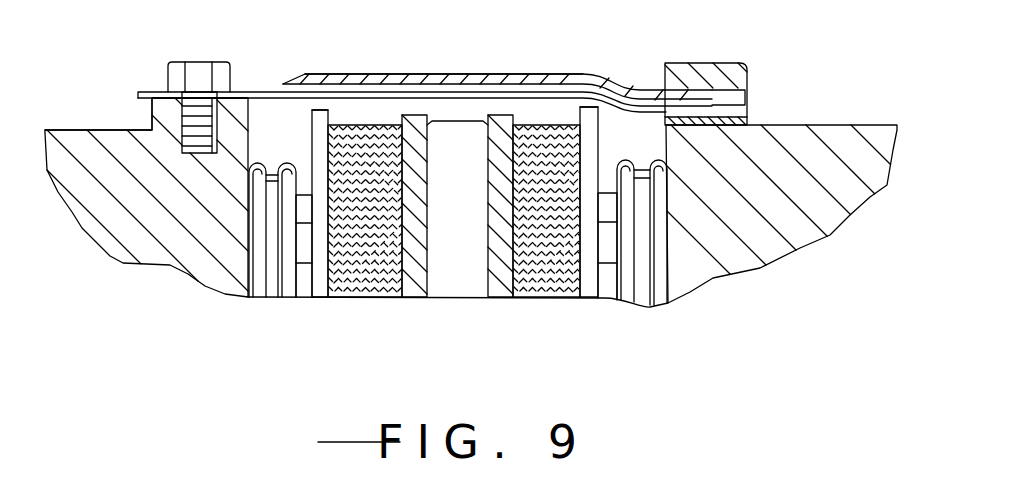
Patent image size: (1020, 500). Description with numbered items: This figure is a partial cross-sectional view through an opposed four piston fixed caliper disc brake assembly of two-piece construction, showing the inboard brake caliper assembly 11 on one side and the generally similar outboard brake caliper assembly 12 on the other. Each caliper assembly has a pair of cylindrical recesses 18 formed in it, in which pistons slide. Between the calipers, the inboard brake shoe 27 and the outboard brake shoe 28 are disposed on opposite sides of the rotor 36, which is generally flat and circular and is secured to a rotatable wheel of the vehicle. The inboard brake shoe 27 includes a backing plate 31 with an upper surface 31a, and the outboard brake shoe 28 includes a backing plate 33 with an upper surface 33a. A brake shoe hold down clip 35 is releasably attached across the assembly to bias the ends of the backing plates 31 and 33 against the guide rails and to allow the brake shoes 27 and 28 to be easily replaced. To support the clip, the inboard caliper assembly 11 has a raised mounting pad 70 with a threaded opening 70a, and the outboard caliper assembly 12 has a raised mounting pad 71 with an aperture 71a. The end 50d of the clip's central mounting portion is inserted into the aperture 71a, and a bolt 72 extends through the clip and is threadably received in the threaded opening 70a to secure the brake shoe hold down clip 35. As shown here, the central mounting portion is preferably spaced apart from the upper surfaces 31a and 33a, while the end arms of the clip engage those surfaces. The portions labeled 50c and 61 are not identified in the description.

The inboard brake caliper assembly 11 is at (90, 215).
The outboard brake caliper assembly 12 is at (812, 243).
The cylindrical recess 18 is at (257, 300).
The inboard brake shoe 27 is at (368, 298).
The outboard brake shoe 28 is at (546, 298).
The backing plate 31 is at (320, 307).
The upper surface 31a is at (320, 110).
The backing plate 33 is at (590, 300).
The upper surface 33a is at (588, 107).
The brake shoe hold down clip 35 is at (448, 74).
The rotor 36 is at (456, 300).
The strap left end 50c is at (138, 92).
The end of central mounting portion 50d is at (750, 97).
The top surface of gasket 61 is at (383, 74).
The raised mounting pad 70 is at (150, 112).
The threaded opening 70a is at (190, 153).
The raised mounting pad 71 is at (697, 76).
The aperture 71a is at (747, 113).
The bolt 72 is at (193, 60).